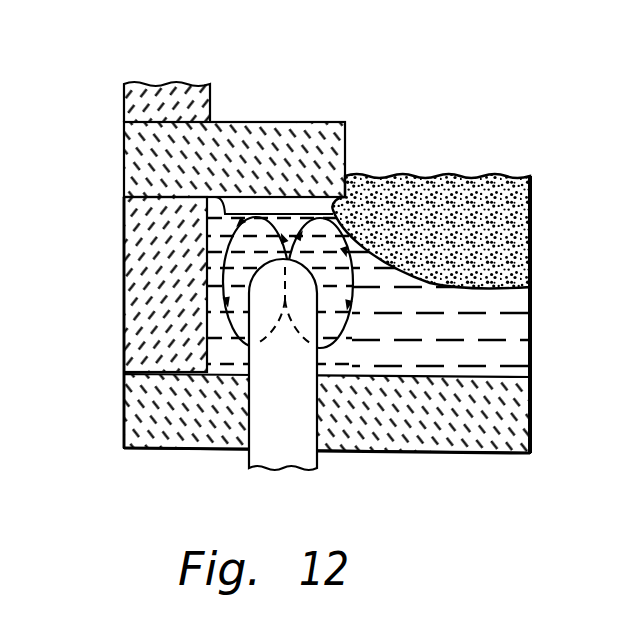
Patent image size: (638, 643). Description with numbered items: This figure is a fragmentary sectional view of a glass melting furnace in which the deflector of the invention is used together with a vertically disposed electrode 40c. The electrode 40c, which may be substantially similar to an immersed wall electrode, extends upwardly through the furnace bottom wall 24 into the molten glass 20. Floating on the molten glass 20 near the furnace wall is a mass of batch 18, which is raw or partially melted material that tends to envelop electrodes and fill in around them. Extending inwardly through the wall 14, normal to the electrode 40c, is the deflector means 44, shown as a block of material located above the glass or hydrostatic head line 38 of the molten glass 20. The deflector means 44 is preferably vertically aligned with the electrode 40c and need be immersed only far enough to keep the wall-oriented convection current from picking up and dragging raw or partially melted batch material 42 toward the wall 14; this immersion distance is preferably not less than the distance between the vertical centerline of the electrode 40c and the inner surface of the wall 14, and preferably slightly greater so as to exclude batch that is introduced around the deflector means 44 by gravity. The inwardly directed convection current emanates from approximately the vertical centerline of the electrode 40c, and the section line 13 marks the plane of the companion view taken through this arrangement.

The deflector means 44 is at (128, 154).
The wall 14 is at (128, 272).
The furnace bottom wall 24 is at (460, 422).
The batch 18 is at (460, 245).
The molten glass 20 is at (451, 347).
The glass or hydrostatic head line 38 is at (207, 198).
The raw or partially melted batch material 42 is at (232, 328).
The vertically disposed electrode 40c is at (300, 454).
The section line 13 is at (255, 53).